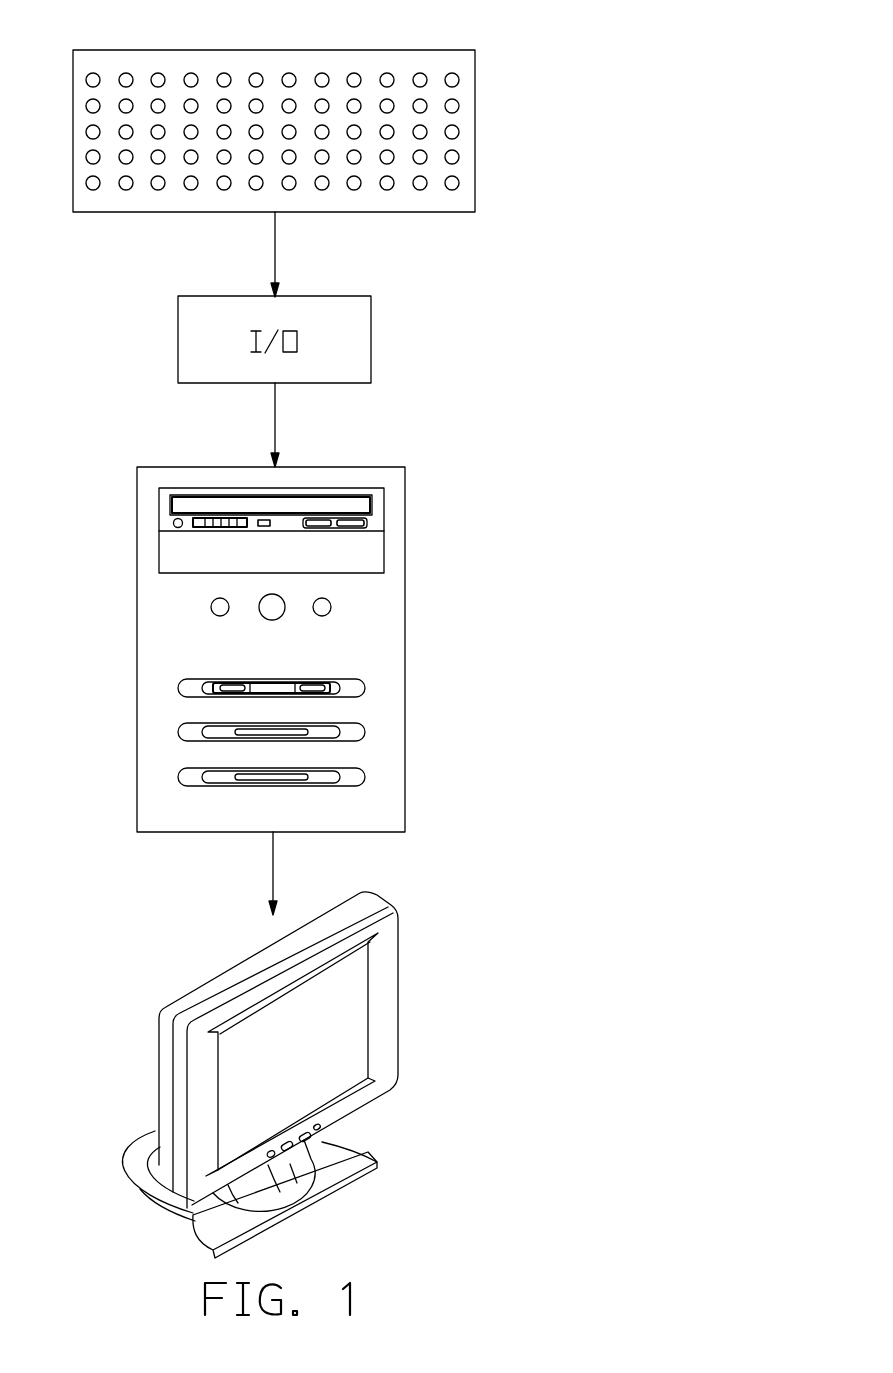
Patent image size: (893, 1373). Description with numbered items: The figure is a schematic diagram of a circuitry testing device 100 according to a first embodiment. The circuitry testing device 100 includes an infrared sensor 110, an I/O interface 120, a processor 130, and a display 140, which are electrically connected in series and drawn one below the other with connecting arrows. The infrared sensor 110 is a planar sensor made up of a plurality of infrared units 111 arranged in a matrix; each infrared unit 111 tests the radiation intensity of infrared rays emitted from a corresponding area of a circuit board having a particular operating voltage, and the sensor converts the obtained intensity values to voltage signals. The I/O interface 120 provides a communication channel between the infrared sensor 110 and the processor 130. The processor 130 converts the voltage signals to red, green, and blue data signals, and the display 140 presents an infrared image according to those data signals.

The circuitry testing device 100 is at (274, 31).
The infrared sensor 110 is at (476, 86).
The infrared unit 111 is at (458, 110).
The I/O interface 120 is at (371, 325).
The processor 130 is at (405, 527).
The display 140 is at (382, 973).